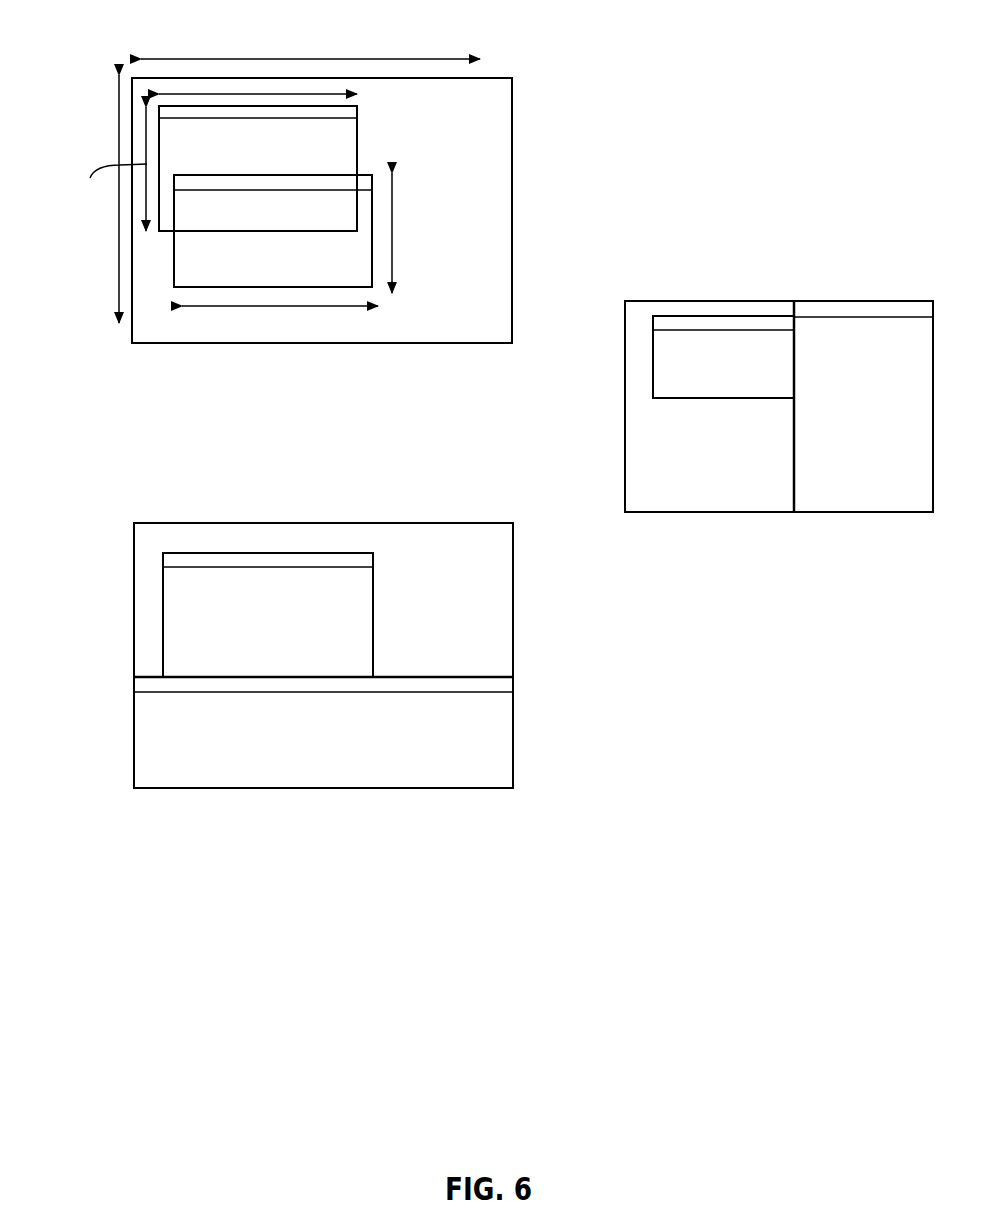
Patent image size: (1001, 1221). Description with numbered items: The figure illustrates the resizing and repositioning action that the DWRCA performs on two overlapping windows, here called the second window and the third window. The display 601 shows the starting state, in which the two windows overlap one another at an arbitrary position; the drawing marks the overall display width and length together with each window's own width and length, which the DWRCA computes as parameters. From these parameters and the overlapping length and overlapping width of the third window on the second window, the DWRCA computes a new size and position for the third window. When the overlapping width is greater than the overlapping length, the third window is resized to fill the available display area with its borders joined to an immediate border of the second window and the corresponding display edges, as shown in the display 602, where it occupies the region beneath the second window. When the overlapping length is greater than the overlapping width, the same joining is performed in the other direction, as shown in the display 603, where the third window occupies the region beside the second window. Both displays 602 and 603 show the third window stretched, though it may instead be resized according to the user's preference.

The display 601 is at (275, 177).
The display 602 is at (323, 634).
The display 603 is at (779, 369).